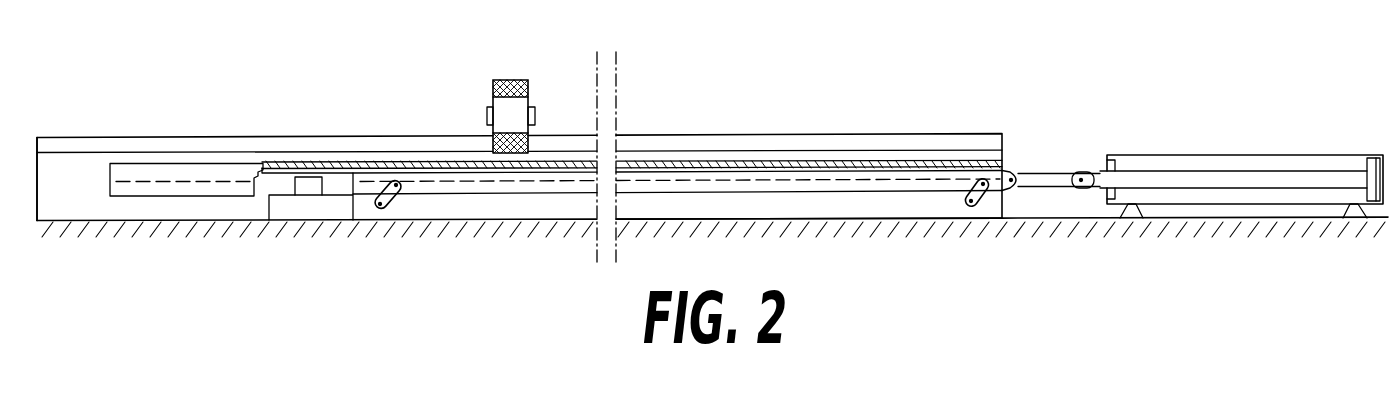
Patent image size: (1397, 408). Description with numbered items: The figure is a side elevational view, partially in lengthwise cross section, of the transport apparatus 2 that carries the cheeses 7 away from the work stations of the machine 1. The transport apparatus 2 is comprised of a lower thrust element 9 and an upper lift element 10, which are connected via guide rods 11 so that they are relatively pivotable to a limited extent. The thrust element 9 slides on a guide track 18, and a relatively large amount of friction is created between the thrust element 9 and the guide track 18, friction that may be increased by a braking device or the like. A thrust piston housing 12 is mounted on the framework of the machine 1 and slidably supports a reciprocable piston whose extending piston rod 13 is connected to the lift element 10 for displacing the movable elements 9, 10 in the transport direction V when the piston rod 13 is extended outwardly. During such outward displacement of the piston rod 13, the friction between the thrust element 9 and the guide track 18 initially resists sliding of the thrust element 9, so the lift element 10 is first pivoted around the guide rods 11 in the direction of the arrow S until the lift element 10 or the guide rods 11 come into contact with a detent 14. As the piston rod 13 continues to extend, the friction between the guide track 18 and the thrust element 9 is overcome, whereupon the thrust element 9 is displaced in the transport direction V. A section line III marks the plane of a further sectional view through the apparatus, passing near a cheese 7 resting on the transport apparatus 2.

The machine 1 is at (238, 279).
The transport apparatus 2 is at (823, 117).
The cheese 7 is at (497, 83).
The thrust element 9 is at (826, 207).
The lift element 10 is at (918, 178).
The guide rod 11 is at (387, 205).
The thrust piston housing 12 is at (1196, 155).
The piston rod 13 is at (1097, 168).
The detent 14 is at (300, 180).
The guide track 18 is at (58, 220).
The pivoting direction arrow S is at (368, 182).
The transport direction V is at (303, 107).
The section line III- III is at (547, 283).